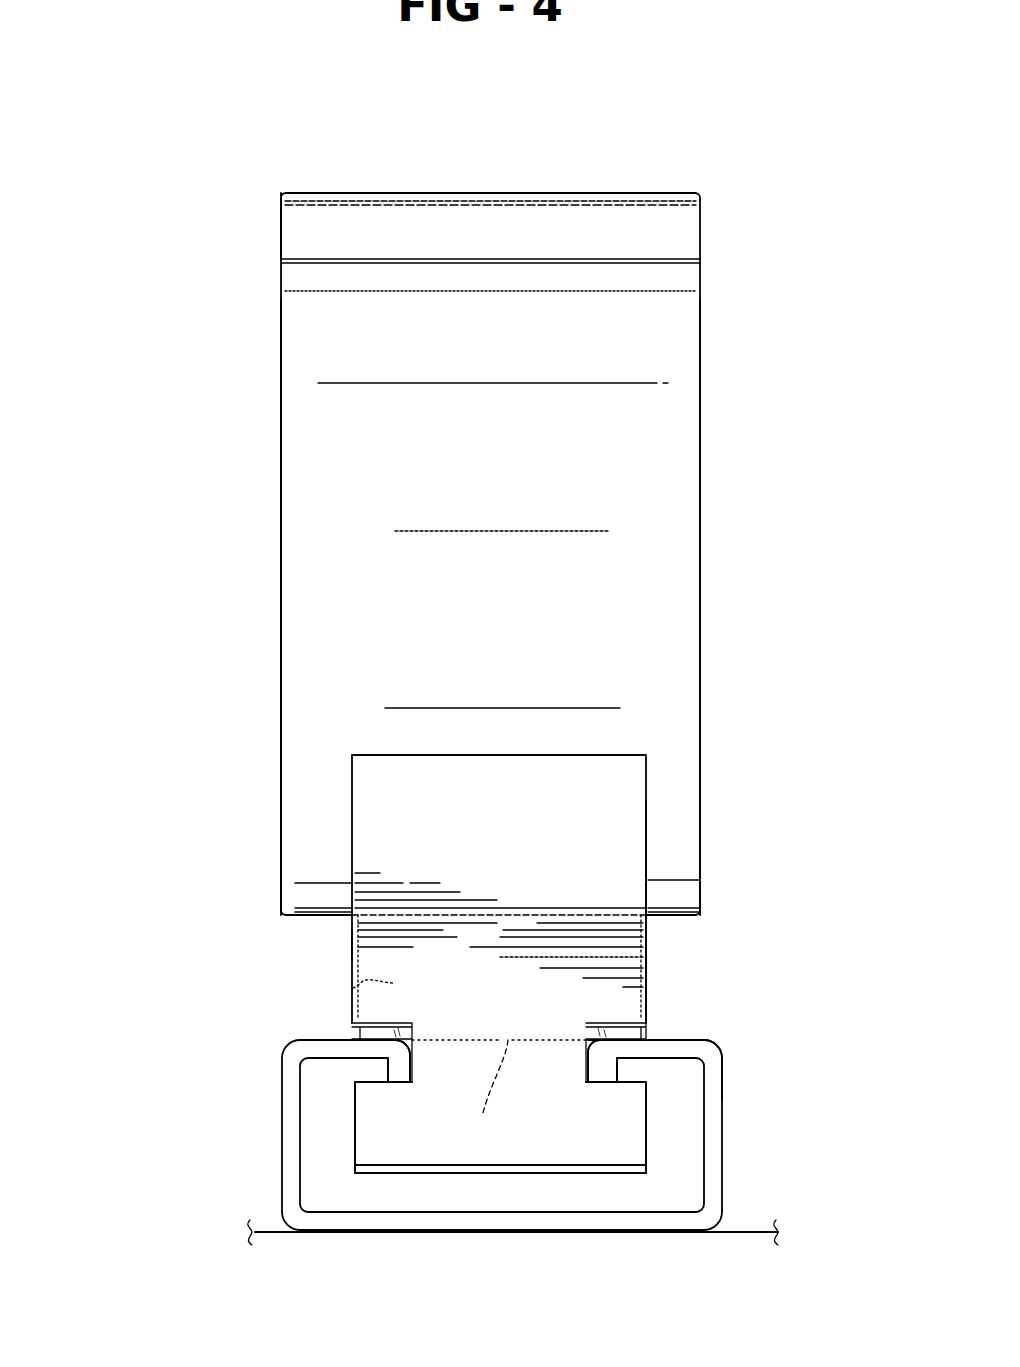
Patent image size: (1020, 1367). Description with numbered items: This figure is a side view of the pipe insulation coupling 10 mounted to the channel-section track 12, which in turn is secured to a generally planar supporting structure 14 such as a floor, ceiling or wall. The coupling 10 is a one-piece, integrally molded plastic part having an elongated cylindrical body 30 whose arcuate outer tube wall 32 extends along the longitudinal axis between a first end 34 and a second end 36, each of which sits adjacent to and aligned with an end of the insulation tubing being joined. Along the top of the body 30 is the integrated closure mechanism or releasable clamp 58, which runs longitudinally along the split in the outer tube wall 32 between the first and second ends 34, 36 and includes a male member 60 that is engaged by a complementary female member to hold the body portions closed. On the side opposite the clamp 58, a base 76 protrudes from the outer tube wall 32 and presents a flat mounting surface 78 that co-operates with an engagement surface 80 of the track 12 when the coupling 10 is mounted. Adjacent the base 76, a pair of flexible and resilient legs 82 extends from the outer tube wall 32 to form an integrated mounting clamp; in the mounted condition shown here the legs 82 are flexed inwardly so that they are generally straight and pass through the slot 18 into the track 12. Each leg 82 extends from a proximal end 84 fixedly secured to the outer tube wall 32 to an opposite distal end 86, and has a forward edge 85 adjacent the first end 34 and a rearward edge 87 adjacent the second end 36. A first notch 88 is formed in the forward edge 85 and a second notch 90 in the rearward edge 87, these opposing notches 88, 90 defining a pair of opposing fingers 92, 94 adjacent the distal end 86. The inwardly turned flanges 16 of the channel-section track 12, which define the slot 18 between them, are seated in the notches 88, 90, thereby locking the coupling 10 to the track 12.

The pipe insulation coupling 10 is at (195, 318).
The channel-section track 12 is at (285, 1125).
The supporting structure 14 is at (283, 1233).
The flanges 16 is at (393, 1068).
The slot 18 is at (592, 1068).
The cylindrical body 30 is at (703, 400).
The outer tube wall 32 is at (325, 467).
The first end 34 is at (705, 553).
The second end 36 is at (284, 650).
The clamp 58 is at (712, 190).
The male member 60 is at (517, 213).
The base 76 is at (353, 988).
The flat mounting surface 78 is at (499, 1093).
The engagement surface 80 is at (685, 1040).
The legs 82 is at (632, 868).
The proximal end 84 is at (482, 766).
The forward edge 85 is at (648, 960).
The distal end 86 is at (563, 1176).
The rearward edge 87 is at (352, 942).
The first notch 88 is at (587, 1055).
The second notch 90 is at (413, 1062).
The first finger 92 is at (637, 1132).
The second finger 94 is at (373, 1117).